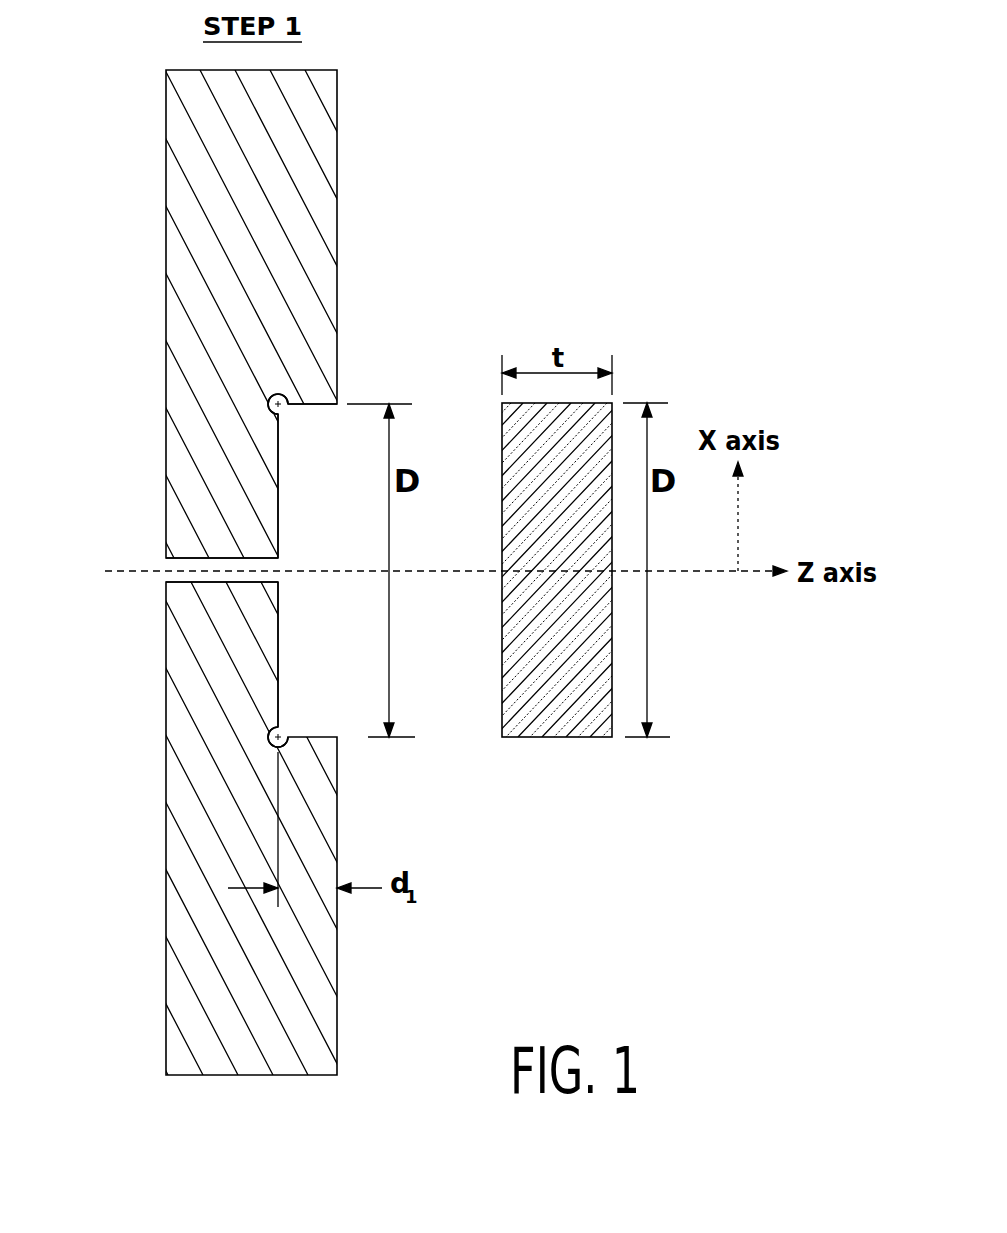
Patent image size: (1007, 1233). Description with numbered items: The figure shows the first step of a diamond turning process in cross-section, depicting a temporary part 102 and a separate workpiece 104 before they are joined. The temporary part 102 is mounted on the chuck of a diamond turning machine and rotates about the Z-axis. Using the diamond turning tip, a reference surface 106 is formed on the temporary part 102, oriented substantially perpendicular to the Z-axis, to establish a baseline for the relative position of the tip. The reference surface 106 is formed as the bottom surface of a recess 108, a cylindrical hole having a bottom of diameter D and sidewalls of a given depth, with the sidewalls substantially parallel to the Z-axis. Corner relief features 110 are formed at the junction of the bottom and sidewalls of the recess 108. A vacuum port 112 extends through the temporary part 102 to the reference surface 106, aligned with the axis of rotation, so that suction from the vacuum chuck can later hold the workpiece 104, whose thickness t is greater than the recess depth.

The temporary part 102 is at (288, 190).
The workpiece 104 is at (593, 422).
The reference surface 106 is at (290, 684).
The recess 108 is at (330, 447).
The corner relief feature 110 is at (274, 392).
The vacuum port 112 is at (152, 588).